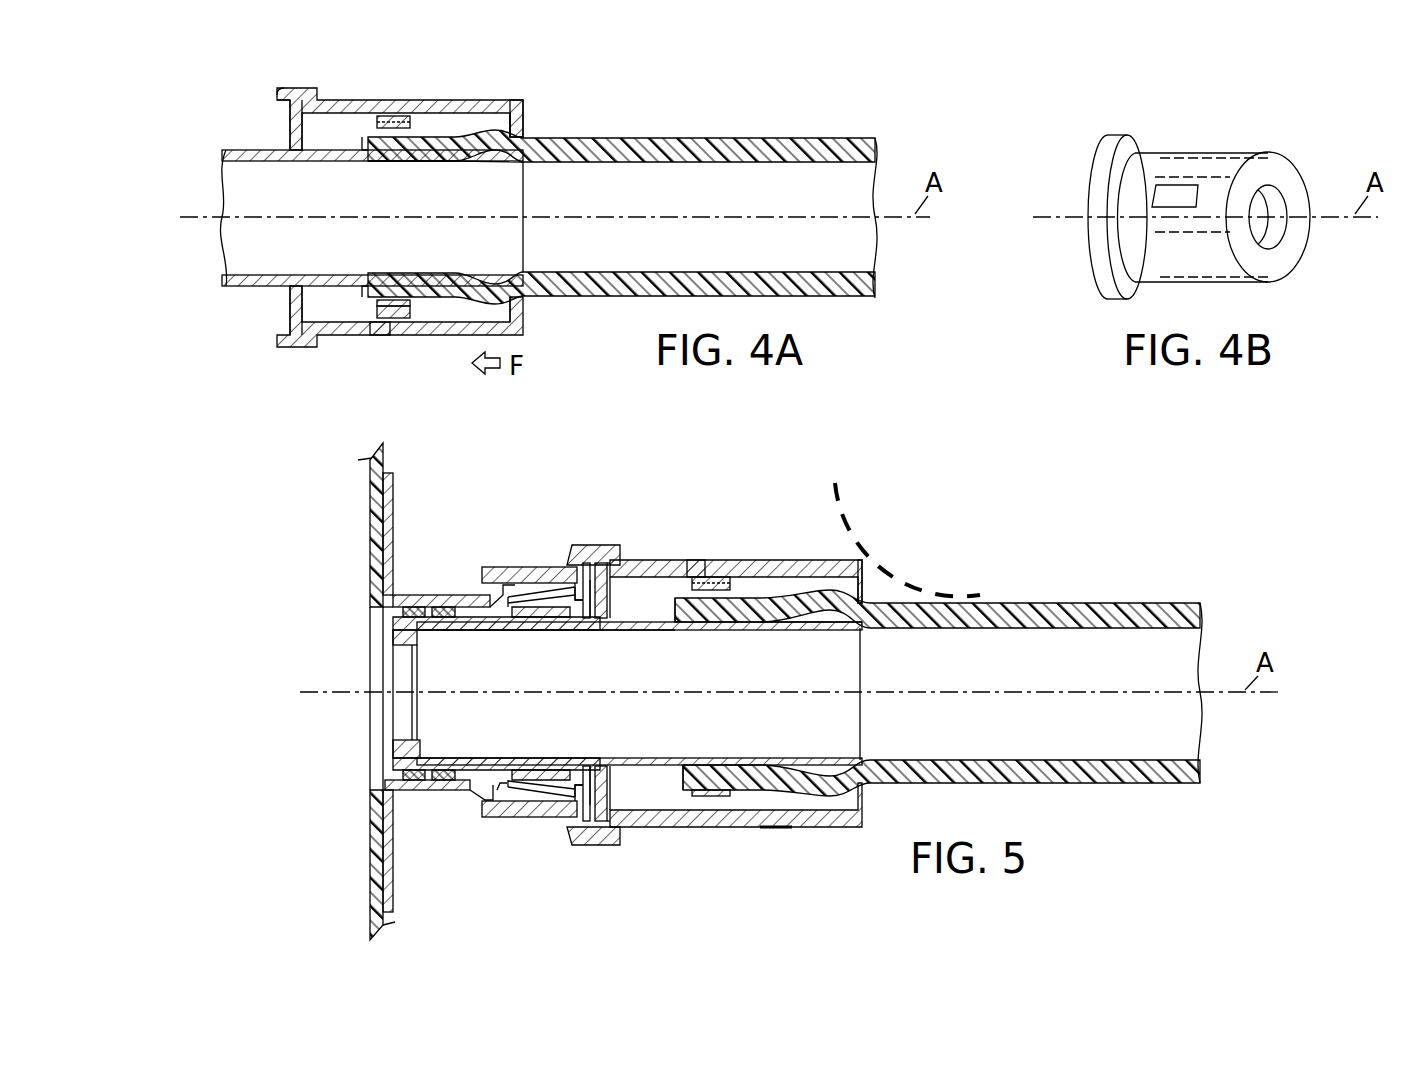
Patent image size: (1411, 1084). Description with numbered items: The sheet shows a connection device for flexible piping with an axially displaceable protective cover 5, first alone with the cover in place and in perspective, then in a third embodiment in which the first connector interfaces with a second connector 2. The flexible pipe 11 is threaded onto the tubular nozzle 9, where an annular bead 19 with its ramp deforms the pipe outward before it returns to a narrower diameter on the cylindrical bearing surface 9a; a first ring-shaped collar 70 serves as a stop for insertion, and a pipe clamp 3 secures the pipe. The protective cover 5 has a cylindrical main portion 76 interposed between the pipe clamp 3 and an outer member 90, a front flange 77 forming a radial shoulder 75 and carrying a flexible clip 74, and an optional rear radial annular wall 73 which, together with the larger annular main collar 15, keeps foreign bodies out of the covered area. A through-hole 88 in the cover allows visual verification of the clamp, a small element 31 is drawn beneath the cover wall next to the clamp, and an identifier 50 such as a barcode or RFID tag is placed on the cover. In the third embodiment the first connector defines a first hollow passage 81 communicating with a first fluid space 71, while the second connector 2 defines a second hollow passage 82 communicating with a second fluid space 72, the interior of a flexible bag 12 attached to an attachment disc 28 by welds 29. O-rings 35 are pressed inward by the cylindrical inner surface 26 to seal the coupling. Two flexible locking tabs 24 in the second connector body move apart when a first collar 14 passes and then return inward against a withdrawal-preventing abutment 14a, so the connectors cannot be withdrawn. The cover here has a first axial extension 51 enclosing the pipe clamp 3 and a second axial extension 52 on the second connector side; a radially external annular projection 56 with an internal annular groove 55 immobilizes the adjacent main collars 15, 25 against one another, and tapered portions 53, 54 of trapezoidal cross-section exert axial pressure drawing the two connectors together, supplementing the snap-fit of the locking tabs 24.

In FIG. 5, the second connector 2 is at (445, 798).
In FIG. 4A, the pipe clamp 3 is at (395, 310).
In FIG. 5, the pipe clamp 3 is at (712, 798).
In FIG. 4A, the protective cover 5 is at (530, 340).
In FIG. 4B, the protective cover 5 is at (1230, 181).
In FIG. 5, the protective cover 5 is at (708, 525).
In FIG. 4A, the tubular nozzle 9 is at (390, 163).
In FIG. 5, the tubular nozzle 9 is at (750, 742).
In FIG. 5, the cylindrical bearing surface 9a is at (718, 632).
In FIG. 4A, the flexible pipe 11 is at (710, 136).
In FIG. 5, the flexible pipe 11 is at (1028, 600).
In FIG. 5, the flexible bag 12 is at (368, 545).
In FIG. 5, the first collar 14 is at (500, 780).
In FIG. 5, the withdrawal-preventing abutment 14a is at (512, 790).
In FIG. 4A, the main collar 15 is at (296, 128).
In FIG. 5, the main collar 15 is at (605, 825).
In FIG. 4A, the annular bead 19 is at (485, 163).
In FIG. 5, the annular bead 19 is at (812, 632).
In FIG. 5, the locking tabs 24 is at (548, 800).
In FIG. 5, the main collar 25 is at (588, 822).
In FIG. 5, the cylindrical inner surface 26 is at (425, 782).
In FIG. 5, the attachment disc 28 is at (395, 500).
In FIG. 5, the welds 29 is at (372, 870).
In FIG. 4A, the latch 31 is at (397, 114).
In FIG. 5, the latch 31 is at (712, 578).
In FIG. 5, the O-rings 35 is at (420, 600).
In FIG. 4B, the identifier 50 is at (1175, 195).
In FIG. 5, the identifier 50 is at (772, 830).
In FIG. 5, the first axial extension 51 is at (780, 565).
In FIG. 5, the second axial extension 52 is at (508, 566).
In FIG. 5, the tapered portion 53 is at (565, 580).
In FIG. 5, the tapered portion 54 is at (610, 560).
In FIG. 5, the internal annular groove 55 is at (592, 560).
In FIG. 5, the radially external annular projection 56 is at (585, 545).
In FIG. 4A, the first ring-shaped collar 70 is at (365, 137).
In FIG. 5, the first ring-shaped collar 70 is at (680, 792).
In FIG. 4A, the first fluid space 71 is at (752, 204).
In FIG. 5, the first fluid space 71 is at (928, 676).
In FIG. 4A, the second fluid space 72 is at (503, 254).
In FIG. 5, the second fluid space 72 is at (368, 672).
In FIG. 4A, the rear radial annular wall 73 is at (518, 125).
In FIG. 4B, the rear radial annular wall 73 is at (1282, 258).
In FIG. 4A, the flexible clip 74 is at (280, 92).
In FIG. 4A, the radial shoulder 75 is at (282, 125).
In FIG. 4A, the cylindrical main portion 76 is at (472, 100).
In FIG. 4B, the cylindrical main portion 76 is at (1210, 152).
In FIG. 4A, the front flange 77 is at (286, 90).
In FIG. 4B, the front flange 77 is at (1122, 145).
In FIG. 5, the first hollow passage 81 is at (708, 732).
In FIG. 5, the second hollow passage 82 is at (400, 712).
In FIG. 4A, the through-hole 88 is at (380, 338).
In FIG. 5, the through-hole 88 is at (695, 560).
In FIG. 5, the outer member 90 is at (888, 555).